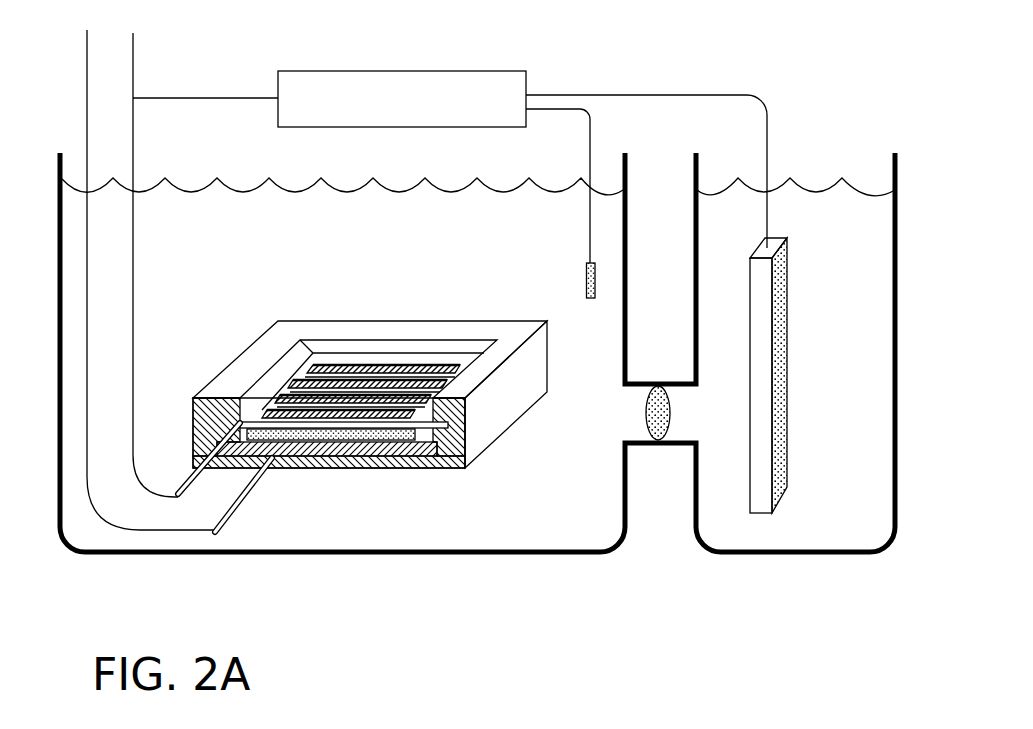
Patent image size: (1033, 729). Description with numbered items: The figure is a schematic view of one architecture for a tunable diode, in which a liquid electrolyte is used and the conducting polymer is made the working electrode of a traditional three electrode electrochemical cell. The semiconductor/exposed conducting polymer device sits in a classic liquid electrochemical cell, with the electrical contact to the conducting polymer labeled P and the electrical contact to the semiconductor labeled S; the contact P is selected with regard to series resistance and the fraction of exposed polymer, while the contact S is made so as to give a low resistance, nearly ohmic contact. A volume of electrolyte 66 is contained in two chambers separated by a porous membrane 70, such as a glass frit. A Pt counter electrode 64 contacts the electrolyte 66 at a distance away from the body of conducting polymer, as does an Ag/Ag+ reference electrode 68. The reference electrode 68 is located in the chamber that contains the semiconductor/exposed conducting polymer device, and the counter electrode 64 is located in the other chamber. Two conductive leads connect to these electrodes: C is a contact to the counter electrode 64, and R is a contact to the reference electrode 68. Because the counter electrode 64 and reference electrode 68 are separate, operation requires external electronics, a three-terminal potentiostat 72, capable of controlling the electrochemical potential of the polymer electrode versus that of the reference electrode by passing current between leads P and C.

The electrolyte 66 is at (525, 526).
The porous membrane 70 is at (644, 401).
The three-terminal potentiostat 72 is at (390, 70).
The contact to the counter electrode C is at (705, 95).
The contact to the reference electrode R is at (590, 206).
The reference electrode 68 is at (585, 288).
The counter electrode 64 is at (780, 308).
The electrical contact to the conducting polymer P is at (176, 489).
The electrical contact to the semiconductor S is at (241, 502).